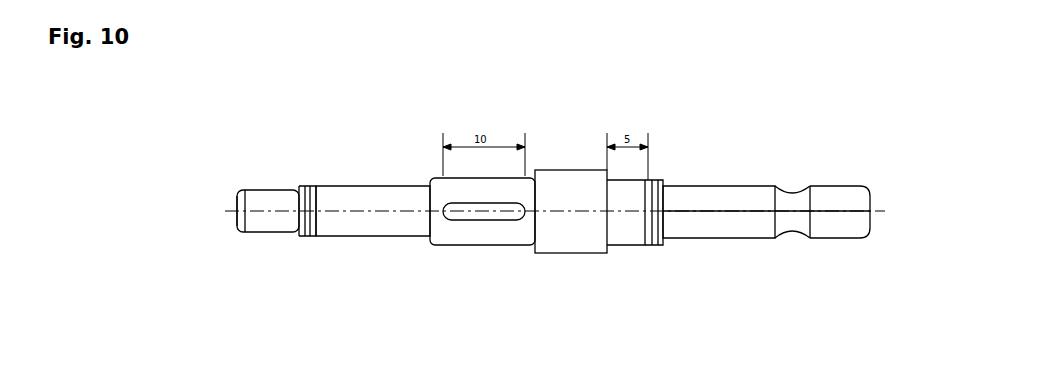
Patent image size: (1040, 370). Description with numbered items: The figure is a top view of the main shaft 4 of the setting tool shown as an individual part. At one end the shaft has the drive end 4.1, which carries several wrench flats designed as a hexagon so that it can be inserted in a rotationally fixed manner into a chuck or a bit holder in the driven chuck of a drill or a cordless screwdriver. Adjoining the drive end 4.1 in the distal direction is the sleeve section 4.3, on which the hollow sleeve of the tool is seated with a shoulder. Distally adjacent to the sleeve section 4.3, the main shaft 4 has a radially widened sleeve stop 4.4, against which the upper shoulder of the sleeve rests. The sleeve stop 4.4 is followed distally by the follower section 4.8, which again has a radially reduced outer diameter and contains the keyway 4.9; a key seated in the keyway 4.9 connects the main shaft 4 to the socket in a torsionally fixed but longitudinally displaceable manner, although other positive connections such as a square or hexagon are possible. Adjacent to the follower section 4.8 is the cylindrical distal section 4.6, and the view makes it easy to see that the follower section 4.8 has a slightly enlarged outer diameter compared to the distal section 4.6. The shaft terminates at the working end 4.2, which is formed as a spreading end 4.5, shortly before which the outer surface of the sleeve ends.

The main shaft 4 is at (855, 164).
The drive end 4.1 is at (875, 199).
The working end 4.2 is at (236, 209).
The sleeve section 4.3 is at (646, 188).
The sleeve stop 4.4 is at (558, 170).
The spreading end 4.5 is at (262, 191).
The distal section 4.6 is at (344, 191).
The follower section 4.8 is at (463, 172).
The keyway 4.9 is at (460, 206).